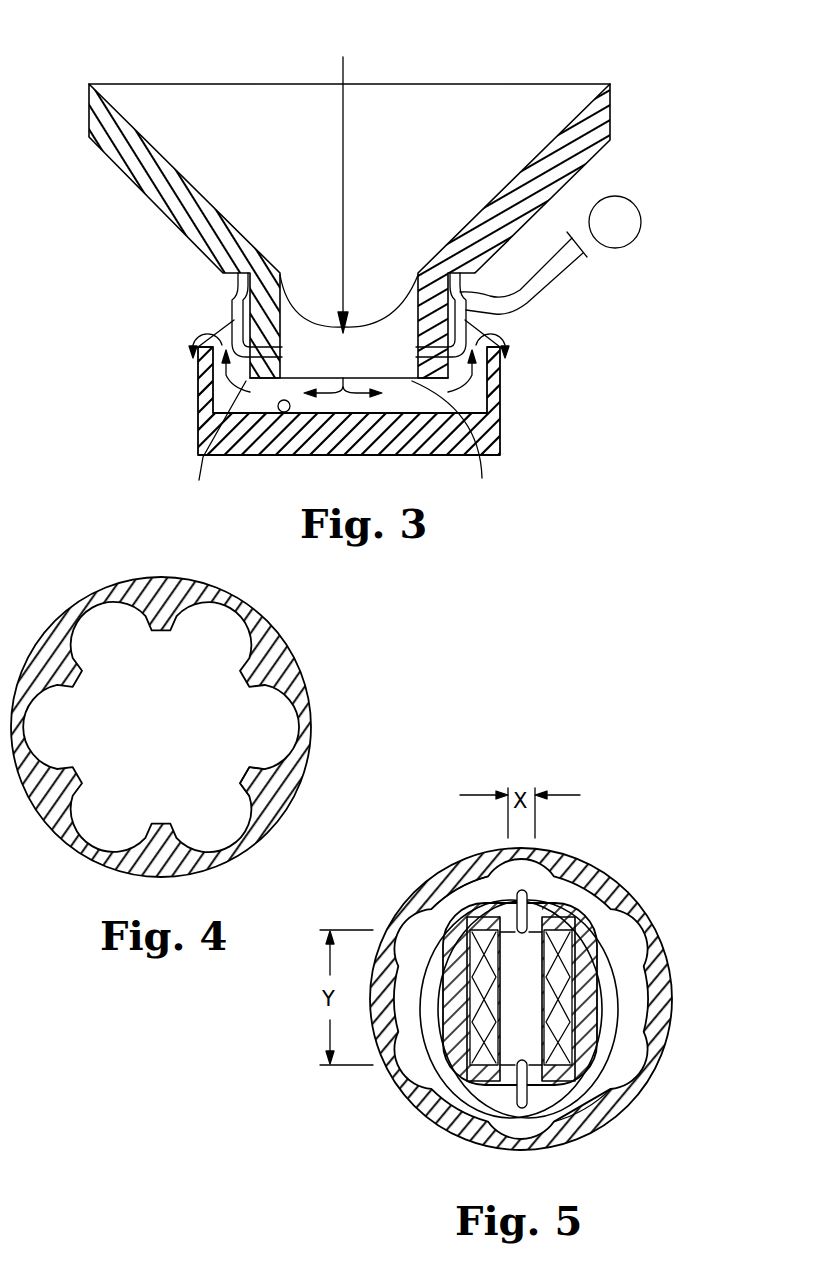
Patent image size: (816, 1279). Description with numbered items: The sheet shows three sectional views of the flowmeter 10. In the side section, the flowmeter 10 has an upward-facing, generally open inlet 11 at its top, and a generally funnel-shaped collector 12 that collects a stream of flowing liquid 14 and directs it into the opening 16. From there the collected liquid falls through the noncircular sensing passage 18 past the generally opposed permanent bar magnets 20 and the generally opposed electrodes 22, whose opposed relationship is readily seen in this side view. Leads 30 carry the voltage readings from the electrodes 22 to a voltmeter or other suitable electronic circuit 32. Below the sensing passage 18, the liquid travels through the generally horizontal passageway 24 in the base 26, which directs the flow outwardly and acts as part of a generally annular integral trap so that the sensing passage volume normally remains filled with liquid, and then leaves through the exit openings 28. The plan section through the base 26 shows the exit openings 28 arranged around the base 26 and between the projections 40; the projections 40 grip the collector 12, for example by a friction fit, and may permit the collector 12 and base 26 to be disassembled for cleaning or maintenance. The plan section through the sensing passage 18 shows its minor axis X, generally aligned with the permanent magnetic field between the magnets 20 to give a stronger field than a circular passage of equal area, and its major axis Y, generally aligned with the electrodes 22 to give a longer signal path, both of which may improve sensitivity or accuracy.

In FIG. 3, the flowmeter 10 is at (590, 54).
In FIG. 3, the inlet 11 is at (195, 83).
In FIG. 3, the collector 12 is at (135, 150).
In FIG. 3, the stream of flowing liquid 14 is at (349, 70).
In FIG. 3, the opening 16 is at (385, 318).
In FIG. 3, the sensing passage 18 is at (303, 350).
In FIG. 5, the sensing passage 18 is at (460, 1088).
In FIG. 5, the permanent bar magnets 20 is at (605, 950).
In FIG. 3, the electrodes 22 is at (338, 443).
In FIG. 5, the electrodes 22 is at (478, 922).
In FIG. 3, the passageway 24 is at (279, 412).
In FIG. 3, the base 26 is at (503, 432).
In FIG. 4, the base 26 is at (288, 664).
In FIG. 5, the base 26 is at (655, 1003).
In FIG. 3, the exit openings 28 is at (490, 330).
In FIG. 4, the exit openings 28 is at (218, 622).
In FIG. 5, the exit openings 28 is at (630, 1060).
In FIG. 3, the leads 30 is at (239, 297).
In FIG. 5, the leads 30 is at (530, 898).
In FIG. 3, the electronic circuit 32 is at (638, 236).
In FIG. 4, the projections 40 is at (256, 781).